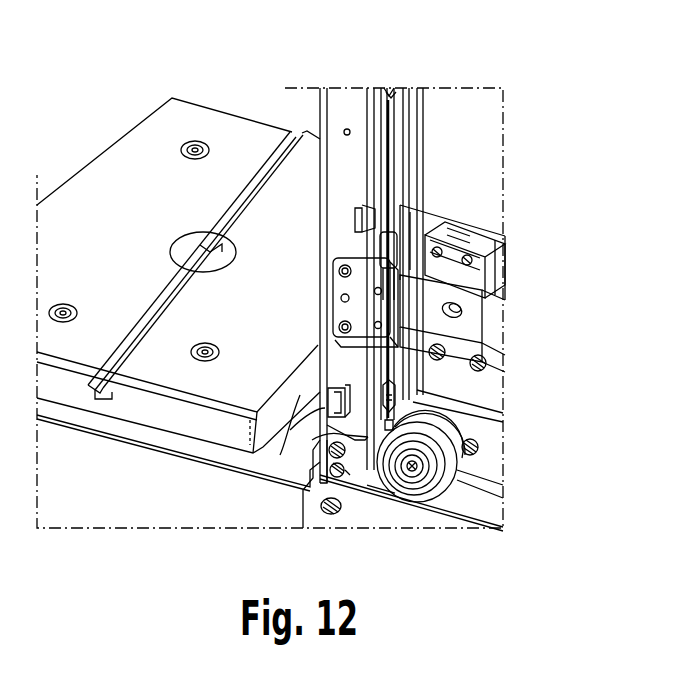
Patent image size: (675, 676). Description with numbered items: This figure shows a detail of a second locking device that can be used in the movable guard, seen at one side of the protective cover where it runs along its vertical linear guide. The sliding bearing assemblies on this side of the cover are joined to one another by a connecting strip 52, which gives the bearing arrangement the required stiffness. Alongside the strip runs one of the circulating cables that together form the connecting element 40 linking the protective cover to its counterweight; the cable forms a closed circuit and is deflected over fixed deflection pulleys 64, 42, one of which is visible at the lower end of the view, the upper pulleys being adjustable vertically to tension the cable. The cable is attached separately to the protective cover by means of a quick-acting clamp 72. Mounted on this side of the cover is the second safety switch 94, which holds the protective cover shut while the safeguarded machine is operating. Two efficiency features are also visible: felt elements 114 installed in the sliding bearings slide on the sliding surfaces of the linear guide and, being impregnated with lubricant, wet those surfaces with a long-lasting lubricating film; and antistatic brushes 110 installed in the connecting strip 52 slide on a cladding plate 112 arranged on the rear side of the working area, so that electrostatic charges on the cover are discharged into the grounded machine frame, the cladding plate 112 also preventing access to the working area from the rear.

The connecting strip 52 is at (347, 105).
The connecting element 40 is at (393, 136).
The quick-acting clamp 72 is at (390, 240).
The second safety switch 94 is at (508, 278).
The roller 42 is at (412, 493).
The deflection pulley 64 is at (411, 460).
The antistatic brush 110 is at (318, 440).
The cladding plate 112 is at (320, 418).
The felt element 114 is at (320, 395).